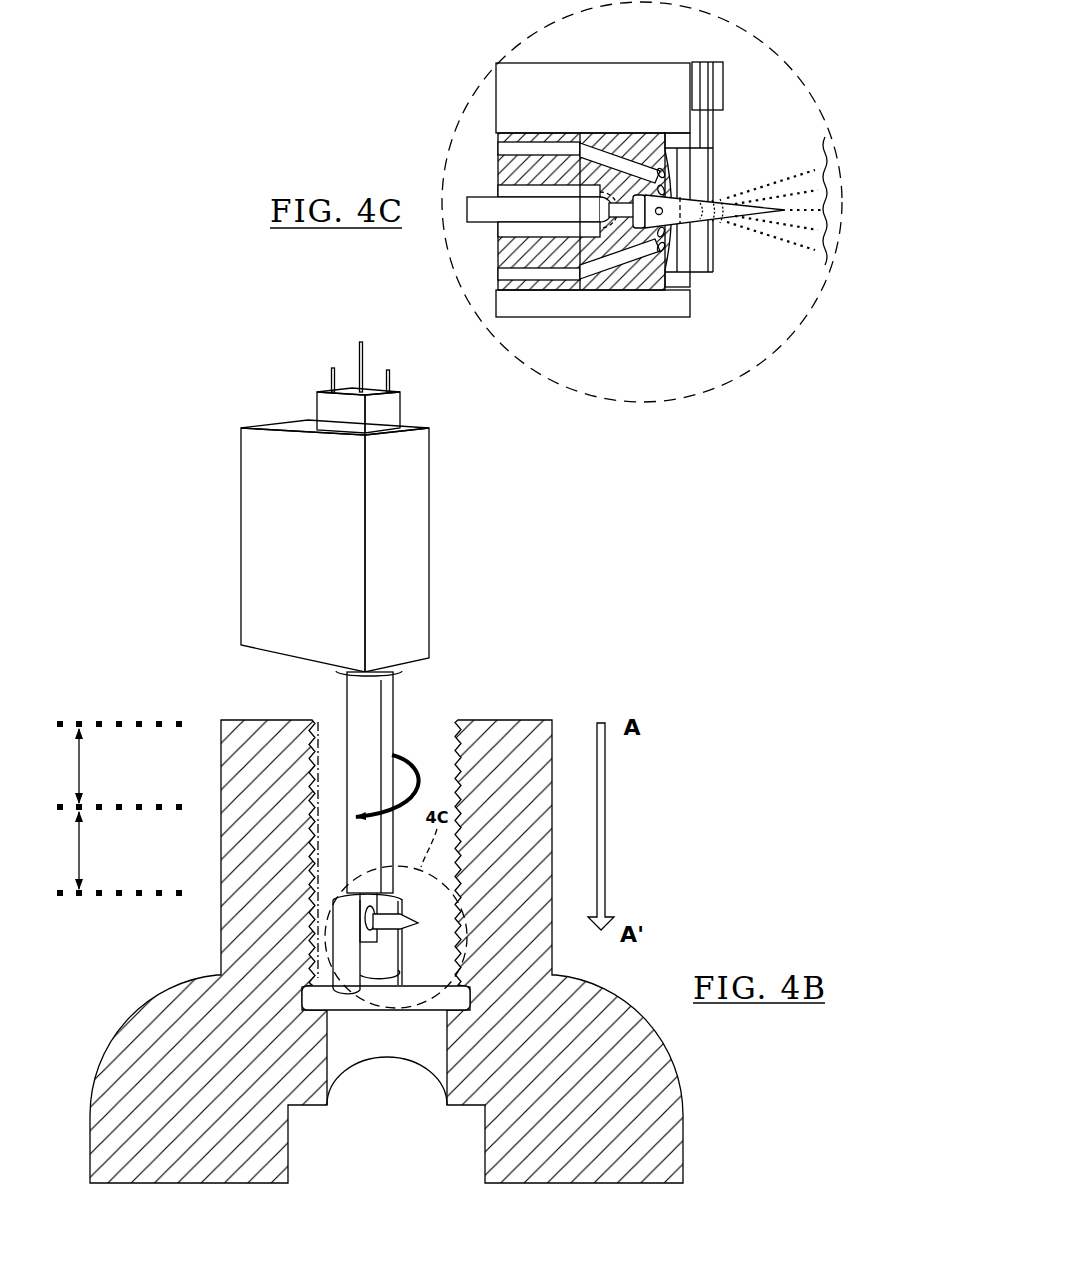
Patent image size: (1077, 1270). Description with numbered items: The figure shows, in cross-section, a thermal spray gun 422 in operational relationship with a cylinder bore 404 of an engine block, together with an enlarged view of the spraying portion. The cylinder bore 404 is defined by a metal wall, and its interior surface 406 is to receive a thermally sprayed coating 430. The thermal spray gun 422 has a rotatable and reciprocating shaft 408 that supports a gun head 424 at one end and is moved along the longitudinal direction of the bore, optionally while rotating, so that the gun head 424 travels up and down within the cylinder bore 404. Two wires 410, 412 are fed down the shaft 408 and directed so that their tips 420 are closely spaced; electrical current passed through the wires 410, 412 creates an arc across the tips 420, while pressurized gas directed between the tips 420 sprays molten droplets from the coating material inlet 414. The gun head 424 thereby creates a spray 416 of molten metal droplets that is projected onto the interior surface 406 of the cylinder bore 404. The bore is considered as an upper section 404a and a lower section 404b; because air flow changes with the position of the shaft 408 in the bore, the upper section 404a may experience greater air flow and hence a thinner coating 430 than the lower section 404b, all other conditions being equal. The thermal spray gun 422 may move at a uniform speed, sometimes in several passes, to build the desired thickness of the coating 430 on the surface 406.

In FIG. 4B, the cylinder bore 404 is at (445, 985).
In FIG. 4B, the upper section of the cylinder bore 404a is at (117, 765).
In FIG. 4B, the lower section of the cylinder bore 404b is at (117, 854).
In FIG. 4B, the interior surface 406 is at (454, 729).
In FIG. 4B, the shaft 408 is at (386, 735).
In FIG. 4B, the wire 410 is at (322, 377).
In FIG. 4B, the wire 412 is at (398, 382).
In FIG. 4B, the coating material inlet 414 is at (350, 352).
In FIG. 4C, the spray 416 is at (784, 170).
In FIG. 4C, the tips 420 is at (607, 143).
In FIG. 4B, the thermal spray gun 422 is at (180, 543).
In FIG. 4B, the gun head 424 is at (423, 938).
In FIG. 4C, the gun head 424 is at (727, 226).
In FIG. 4B, the thermally sprayed coating 430 is at (316, 714).